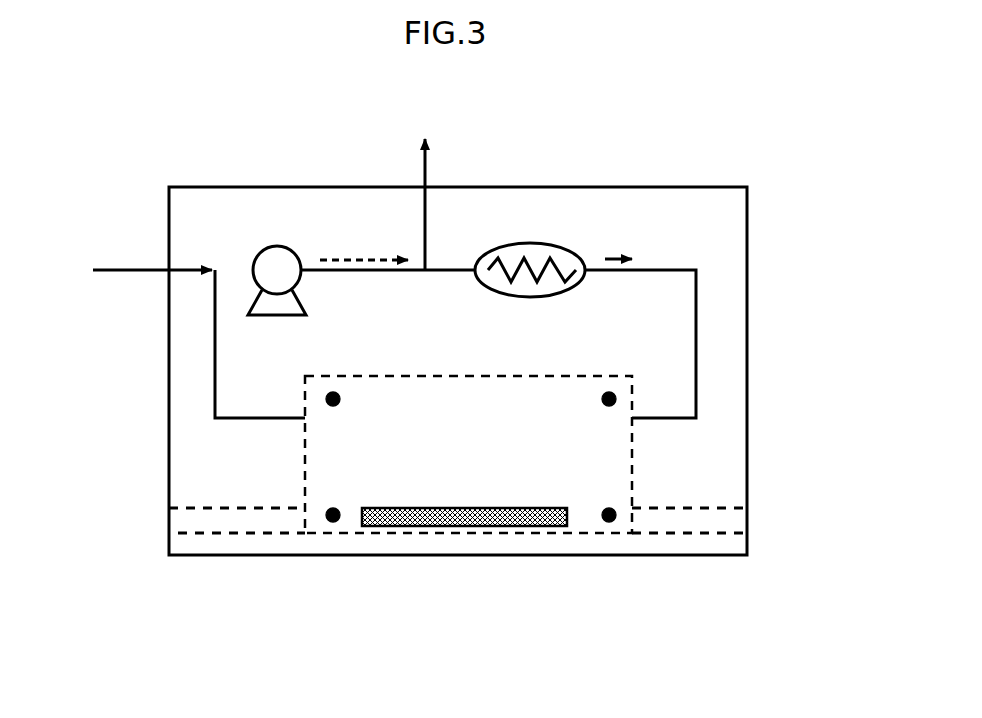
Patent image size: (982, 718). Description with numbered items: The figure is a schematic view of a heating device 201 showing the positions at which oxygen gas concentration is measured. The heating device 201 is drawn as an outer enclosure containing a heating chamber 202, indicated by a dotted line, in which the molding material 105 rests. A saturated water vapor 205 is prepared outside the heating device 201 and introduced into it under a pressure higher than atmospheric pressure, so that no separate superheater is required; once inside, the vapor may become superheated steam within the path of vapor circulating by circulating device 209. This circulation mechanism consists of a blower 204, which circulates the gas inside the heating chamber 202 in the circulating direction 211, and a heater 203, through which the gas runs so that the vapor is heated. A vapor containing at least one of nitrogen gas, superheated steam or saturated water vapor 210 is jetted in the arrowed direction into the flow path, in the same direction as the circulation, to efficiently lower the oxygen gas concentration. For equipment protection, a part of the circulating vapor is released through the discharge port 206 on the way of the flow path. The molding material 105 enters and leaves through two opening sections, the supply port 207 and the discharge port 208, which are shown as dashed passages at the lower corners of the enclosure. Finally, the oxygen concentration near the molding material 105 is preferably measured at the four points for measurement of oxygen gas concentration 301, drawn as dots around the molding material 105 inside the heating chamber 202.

The heating device 201 is at (683, 131).
The heating chamber 202 is at (466, 374).
The heater 203 is at (572, 242).
The blower 204 is at (257, 250).
The saturated water vapor 205 is at (125, 270).
The discharge port 206 is at (424, 188).
The supply port 207 is at (168, 518).
The discharge port 208 is at (748, 518).
The path of vapor circulating by circulating device 209 is at (700, 330).
The vapor containing at least one of nitrogen gas, superheated steam or saturated wa 210 is at (618, 242).
The circulating direction 211 is at (364, 244).
The molding material 105 is at (468, 507).
The point for measurement of oxygen gas concentration 301 is at (603, 520).